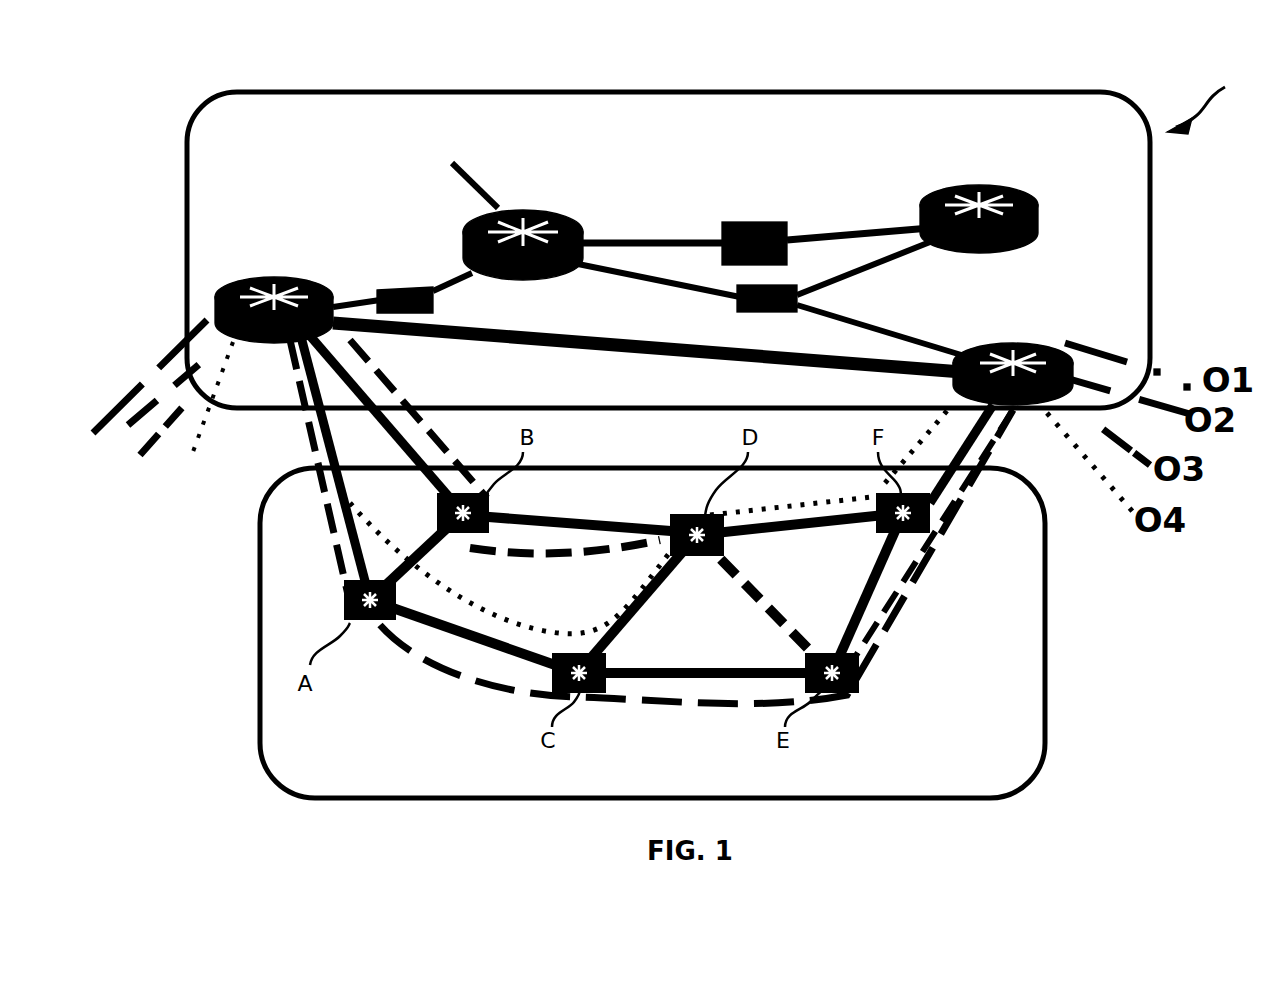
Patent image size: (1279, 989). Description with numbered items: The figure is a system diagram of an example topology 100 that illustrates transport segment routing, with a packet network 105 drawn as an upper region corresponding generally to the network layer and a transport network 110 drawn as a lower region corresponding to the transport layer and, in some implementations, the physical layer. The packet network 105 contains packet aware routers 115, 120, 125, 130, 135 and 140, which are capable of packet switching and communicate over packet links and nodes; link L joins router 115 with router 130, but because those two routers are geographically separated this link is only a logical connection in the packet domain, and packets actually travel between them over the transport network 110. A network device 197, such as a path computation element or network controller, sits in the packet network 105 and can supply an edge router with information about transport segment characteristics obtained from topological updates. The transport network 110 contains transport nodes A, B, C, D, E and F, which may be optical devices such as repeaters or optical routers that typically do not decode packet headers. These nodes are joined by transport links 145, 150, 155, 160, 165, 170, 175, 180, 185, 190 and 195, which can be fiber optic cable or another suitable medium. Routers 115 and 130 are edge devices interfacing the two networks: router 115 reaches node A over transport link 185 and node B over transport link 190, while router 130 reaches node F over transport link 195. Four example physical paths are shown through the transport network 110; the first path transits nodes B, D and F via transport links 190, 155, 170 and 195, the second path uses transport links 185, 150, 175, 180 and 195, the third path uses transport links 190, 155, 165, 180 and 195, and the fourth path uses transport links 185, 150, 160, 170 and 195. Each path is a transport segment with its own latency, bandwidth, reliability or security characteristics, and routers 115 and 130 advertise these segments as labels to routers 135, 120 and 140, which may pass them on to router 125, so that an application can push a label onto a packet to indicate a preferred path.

The topology 100 is at (1223, 107).
The packet network 105 is at (782, 92).
The transport network 110 is at (1046, 752).
The packet aware router 115 is at (262, 284).
The packet aware router 120 is at (524, 214).
The packet aware router 125 is at (1002, 186).
The packet aware router 130 is at (1024, 344).
The packet aware router 135 is at (424, 288).
The packet aware router 140 is at (795, 301).
The transport link 145 is at (422, 565).
The transport link 150 is at (434, 628).
The transport link 155 is at (585, 520).
The transport link 160 is at (644, 632).
The transport link 165 is at (768, 604).
The transport link 170 is at (778, 521).
The transport link 175 is at (698, 685).
The transport link 180 is at (870, 608).
The transport link 185 is at (348, 510).
The transport link 190 is at (398, 451).
The transport link 195 is at (1003, 430).
The network device 197 is at (758, 224).